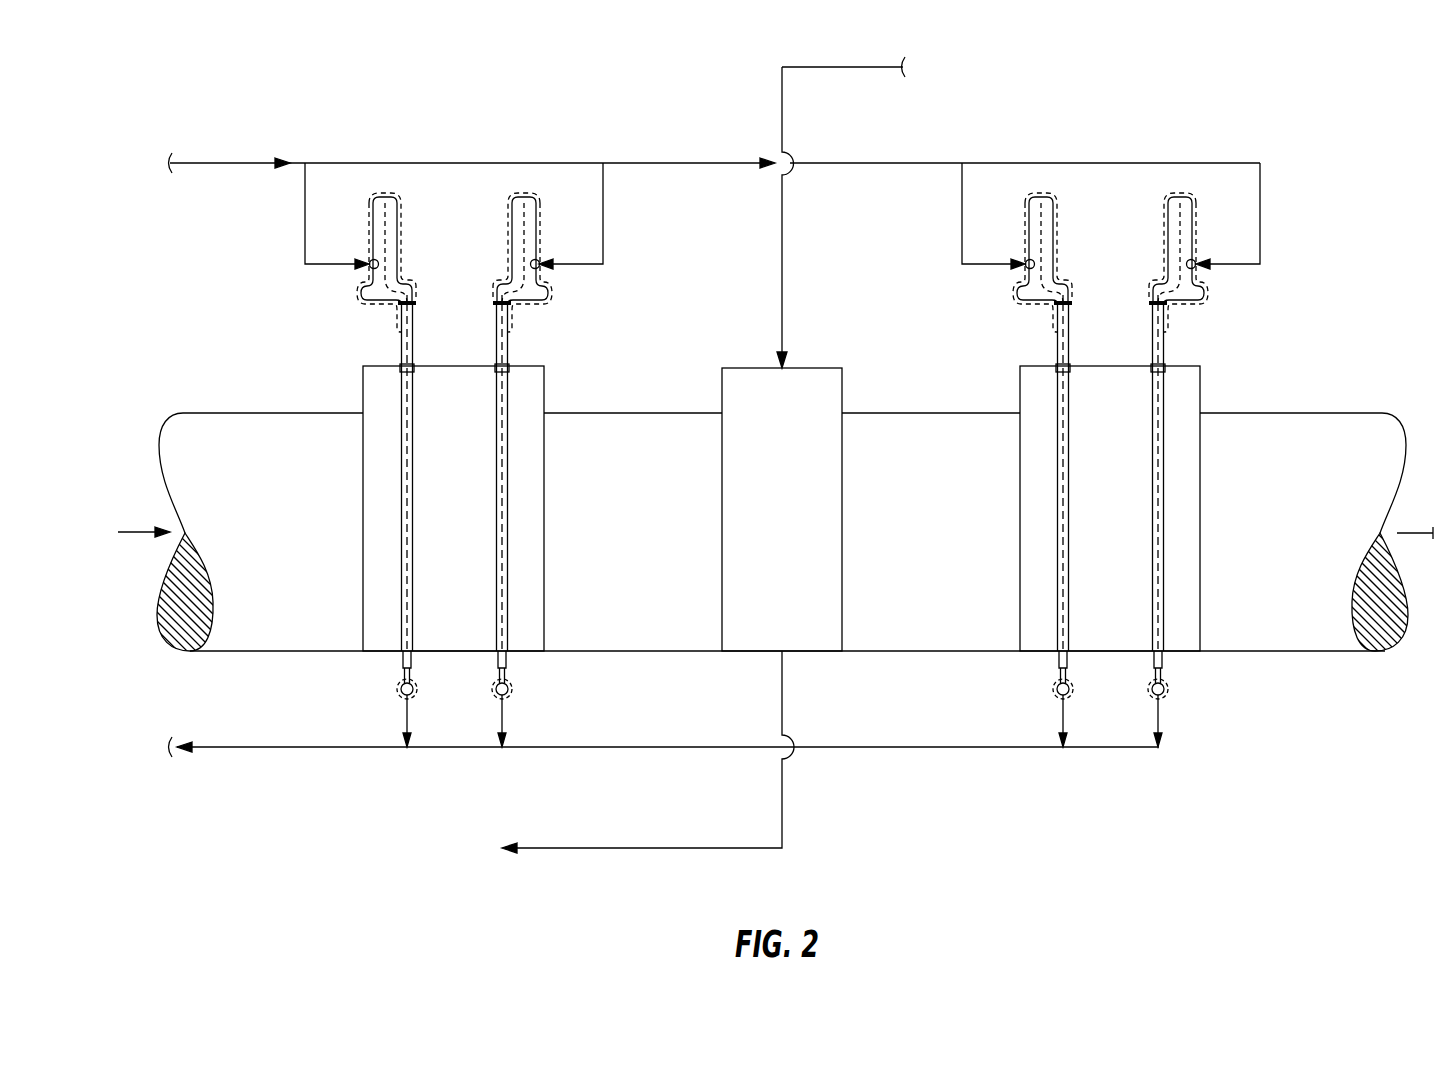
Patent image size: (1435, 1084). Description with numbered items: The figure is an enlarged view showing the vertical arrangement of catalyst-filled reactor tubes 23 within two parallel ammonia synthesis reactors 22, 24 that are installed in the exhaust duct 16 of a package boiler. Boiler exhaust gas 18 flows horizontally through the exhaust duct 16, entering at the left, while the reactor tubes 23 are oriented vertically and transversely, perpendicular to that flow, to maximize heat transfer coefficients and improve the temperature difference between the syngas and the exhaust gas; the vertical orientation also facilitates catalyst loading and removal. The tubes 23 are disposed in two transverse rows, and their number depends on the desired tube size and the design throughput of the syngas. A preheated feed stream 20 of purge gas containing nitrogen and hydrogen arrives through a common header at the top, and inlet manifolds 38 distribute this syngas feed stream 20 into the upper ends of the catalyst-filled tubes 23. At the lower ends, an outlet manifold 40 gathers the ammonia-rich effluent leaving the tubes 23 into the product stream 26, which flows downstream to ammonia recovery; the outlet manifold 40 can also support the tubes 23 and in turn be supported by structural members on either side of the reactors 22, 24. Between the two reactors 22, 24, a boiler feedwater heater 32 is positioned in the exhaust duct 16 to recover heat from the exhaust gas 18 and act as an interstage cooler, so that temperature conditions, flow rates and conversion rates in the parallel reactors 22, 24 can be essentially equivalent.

The exhaust duct 16 is at (727, 554).
The boiler exhaust gas 18 is at (125, 551).
The preheated feed stream 20 is at (715, 212).
The ammonia synthesis reactor 22 is at (472, 489).
The reactor tubes 23 is at (782, 473).
The ammonia synthesis reactor 24 is at (1130, 489).
The reactor effluent 26 is at (666, 752).
The BFW heater 32 is at (802, 490).
The inlet manifolds 38 is at (782, 257).
The outlet manifold 40 is at (782, 690).